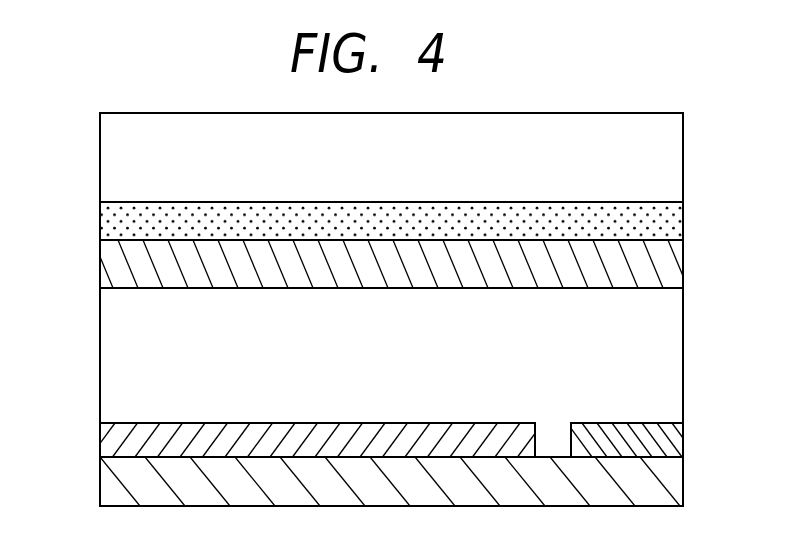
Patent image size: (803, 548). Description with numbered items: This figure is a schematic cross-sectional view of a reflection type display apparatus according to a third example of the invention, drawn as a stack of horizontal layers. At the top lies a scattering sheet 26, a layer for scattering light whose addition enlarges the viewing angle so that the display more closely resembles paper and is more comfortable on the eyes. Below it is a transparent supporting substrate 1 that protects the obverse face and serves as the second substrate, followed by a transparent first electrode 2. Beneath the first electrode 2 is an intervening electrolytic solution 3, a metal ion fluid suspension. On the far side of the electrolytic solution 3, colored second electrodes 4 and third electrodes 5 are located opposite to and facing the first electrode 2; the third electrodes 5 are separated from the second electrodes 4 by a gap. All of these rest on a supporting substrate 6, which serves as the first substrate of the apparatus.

The scattering sheet 26 is at (110, 150).
The transparent supporting substrate 1 is at (110, 219).
The first electrode 2 is at (108, 268).
The electrolytic solution 3 is at (108, 354).
The second electrodes 4 is at (108, 442).
The third electrodes 5 is at (682, 437).
The supporting substrate 6 is at (108, 488).